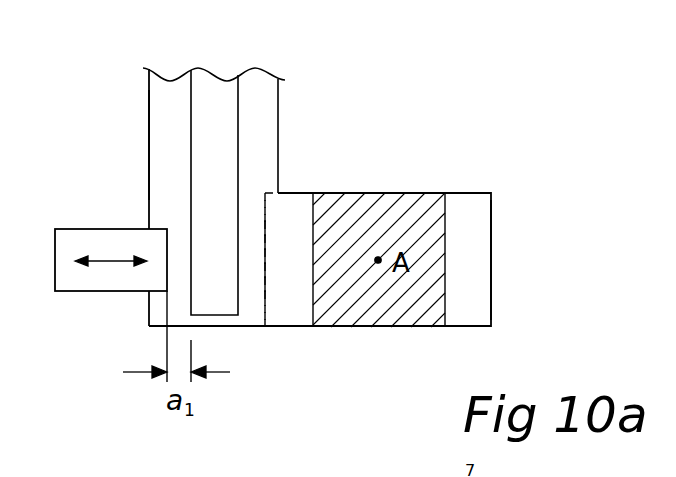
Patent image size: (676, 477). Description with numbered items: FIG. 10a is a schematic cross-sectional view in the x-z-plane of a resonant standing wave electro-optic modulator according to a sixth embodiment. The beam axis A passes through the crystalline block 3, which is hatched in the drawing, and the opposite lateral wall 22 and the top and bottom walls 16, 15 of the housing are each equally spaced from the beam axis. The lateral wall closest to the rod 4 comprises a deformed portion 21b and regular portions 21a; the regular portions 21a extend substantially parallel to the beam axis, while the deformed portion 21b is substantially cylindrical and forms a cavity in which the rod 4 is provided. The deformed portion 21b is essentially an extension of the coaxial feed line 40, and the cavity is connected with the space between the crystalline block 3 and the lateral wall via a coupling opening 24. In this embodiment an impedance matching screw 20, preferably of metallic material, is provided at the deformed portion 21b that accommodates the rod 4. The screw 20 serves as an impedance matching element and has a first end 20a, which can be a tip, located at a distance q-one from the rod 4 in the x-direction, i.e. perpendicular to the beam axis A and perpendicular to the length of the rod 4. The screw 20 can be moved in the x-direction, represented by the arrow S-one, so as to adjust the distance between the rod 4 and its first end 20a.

The crystalline block 3 is at (385, 327).
The rod 4 is at (215, 95).
The bottom wall 15 is at (287, 327).
The top wall 16 is at (467, 193).
The impedance matching screw 20 is at (68, 280).
The first end 20a is at (168, 262).
The regular portions 21a is at (265, 247).
The deformed portion 21b is at (148, 142).
The lateral wall 22 is at (495, 258).
The coupling opening 24 is at (265, 247).
The coaxial feed line 40 is at (283, 120).